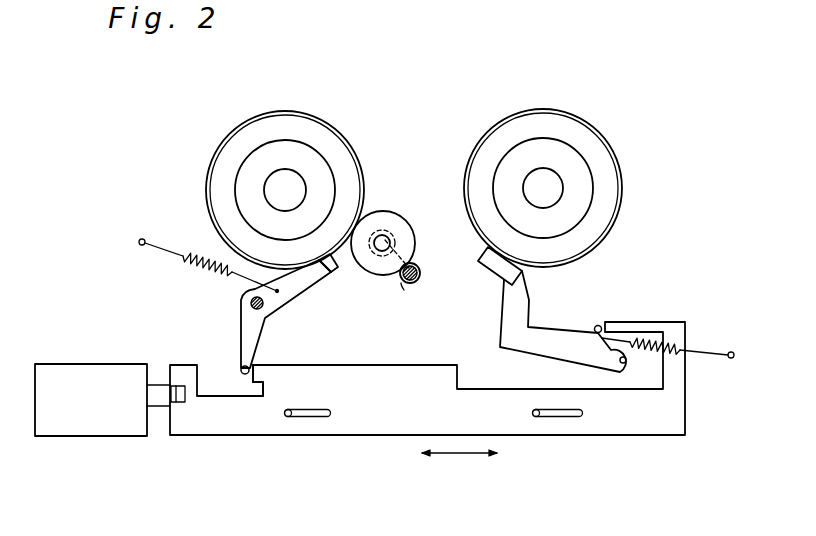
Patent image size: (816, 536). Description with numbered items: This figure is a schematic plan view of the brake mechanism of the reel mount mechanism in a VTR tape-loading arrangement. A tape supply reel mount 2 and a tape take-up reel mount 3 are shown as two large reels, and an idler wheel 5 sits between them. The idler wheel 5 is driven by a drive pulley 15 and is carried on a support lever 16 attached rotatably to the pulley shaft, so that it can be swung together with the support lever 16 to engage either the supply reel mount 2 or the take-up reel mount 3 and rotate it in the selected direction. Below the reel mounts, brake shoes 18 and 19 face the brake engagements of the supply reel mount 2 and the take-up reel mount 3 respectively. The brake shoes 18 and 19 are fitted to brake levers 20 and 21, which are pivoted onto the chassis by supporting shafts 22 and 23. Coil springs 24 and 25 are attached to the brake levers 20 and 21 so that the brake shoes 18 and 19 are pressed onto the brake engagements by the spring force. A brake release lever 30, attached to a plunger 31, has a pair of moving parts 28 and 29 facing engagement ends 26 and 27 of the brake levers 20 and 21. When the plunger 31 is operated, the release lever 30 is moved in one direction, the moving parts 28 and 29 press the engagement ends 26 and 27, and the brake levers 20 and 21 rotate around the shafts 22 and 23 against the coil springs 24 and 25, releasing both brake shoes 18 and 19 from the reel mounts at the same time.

The tape supply reel mount 2 is at (237, 152).
The tape take-up reel mount 3 is at (592, 144).
The idler wheel 5 is at (394, 222).
The drive pulley 15 is at (417, 282).
The support lever 16 is at (404, 290).
The brake shoe 18 is at (329, 270).
The brake shoe 19 is at (497, 283).
The brake lever 20 is at (290, 290).
The brake lever 21 is at (550, 350).
The supporting shaft 22 is at (251, 305).
The supporting shaft 23 is at (624, 364).
The coil spring 24 is at (202, 262).
The coil spring 25 is at (686, 335).
The engagement end 26 is at (242, 374).
The engagement end 27 is at (598, 334).
The moving part 28 is at (268, 386).
The moving part 29 is at (607, 325).
The brake release lever 30 is at (365, 435).
The plunger 31 is at (105, 438).